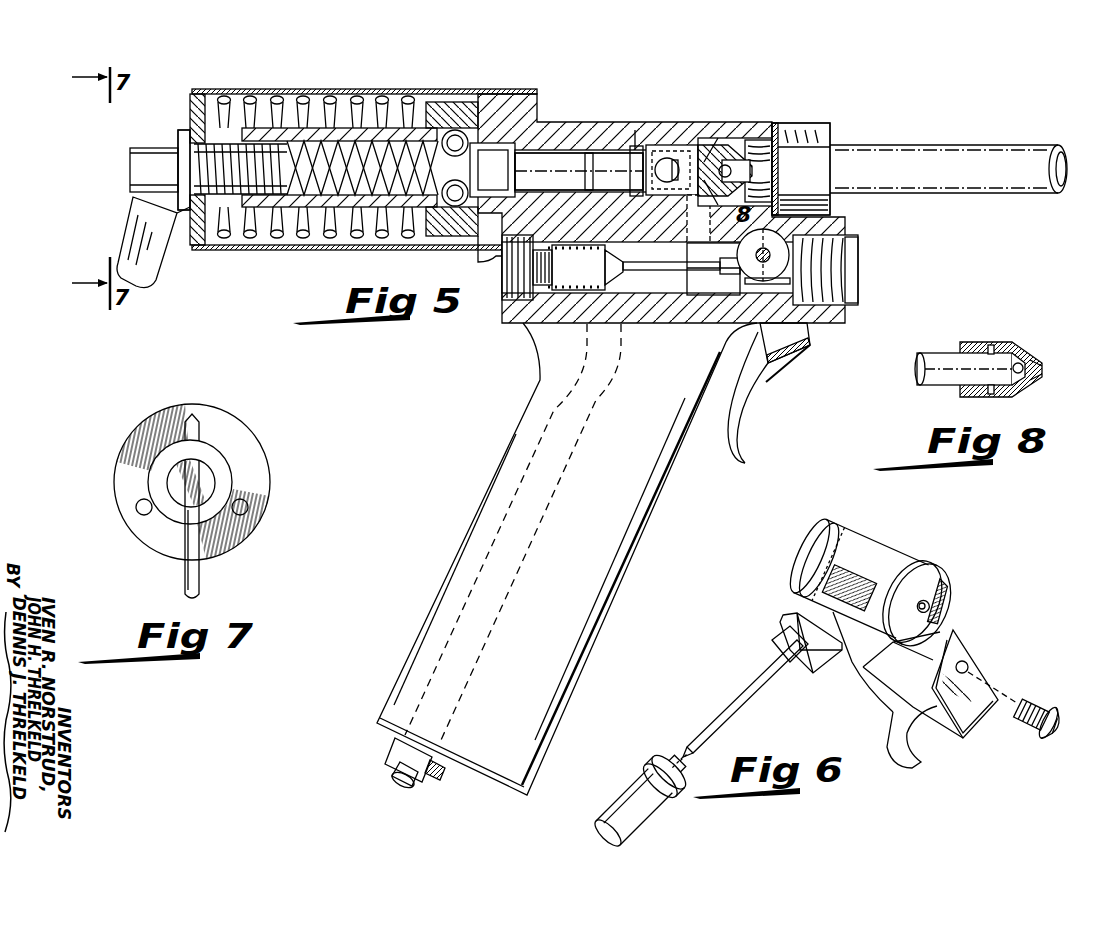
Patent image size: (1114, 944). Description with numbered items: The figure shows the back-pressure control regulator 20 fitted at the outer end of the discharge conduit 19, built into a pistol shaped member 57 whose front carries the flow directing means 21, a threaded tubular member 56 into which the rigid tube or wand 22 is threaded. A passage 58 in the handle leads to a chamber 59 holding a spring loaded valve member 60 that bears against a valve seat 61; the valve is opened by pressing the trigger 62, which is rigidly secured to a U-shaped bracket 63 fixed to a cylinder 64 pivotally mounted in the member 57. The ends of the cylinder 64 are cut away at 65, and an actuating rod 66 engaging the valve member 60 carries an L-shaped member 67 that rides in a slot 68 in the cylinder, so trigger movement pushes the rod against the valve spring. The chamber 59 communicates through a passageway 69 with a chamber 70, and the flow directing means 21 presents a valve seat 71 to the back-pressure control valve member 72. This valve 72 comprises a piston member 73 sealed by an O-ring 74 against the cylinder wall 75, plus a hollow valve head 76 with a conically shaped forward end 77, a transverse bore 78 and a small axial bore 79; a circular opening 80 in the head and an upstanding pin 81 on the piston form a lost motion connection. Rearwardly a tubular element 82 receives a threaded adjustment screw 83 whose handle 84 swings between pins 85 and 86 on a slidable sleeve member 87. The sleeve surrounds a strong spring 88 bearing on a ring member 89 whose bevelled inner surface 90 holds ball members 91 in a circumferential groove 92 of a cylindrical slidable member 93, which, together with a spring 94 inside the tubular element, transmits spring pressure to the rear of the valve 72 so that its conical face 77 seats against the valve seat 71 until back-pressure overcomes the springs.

In FIG. 5, the discharge conduit 19 is at (392, 768).
In FIG. 5, the back-pressure control regulator 20 is at (352, 86).
In FIG. 5, the flow directing means 21 is at (790, 120).
In FIG. 5, the rigid tube or wand 22 is at (920, 153).
In FIG. 5, the threaded tubular member 56 is at (830, 142).
In FIG. 5, the pistol shaped member 57 is at (682, 509).
In FIG. 5, the passage 58 is at (540, 412).
In FIG. 5, the chamber 59 is at (540, 286).
In FIG. 5, the spring loaded valve member 60 is at (585, 267).
In FIG. 6, the spring loaded valve member 60 is at (630, 792).
In FIG. 5, the valve seat 61 is at (630, 274).
In FIG. 5, the trigger 62 is at (764, 386).
In FIG. 6, the trigger 62 is at (890, 730).
In FIG. 6, the U-shaped bracket 63 is at (970, 660).
In FIG. 6, the cylinder 64 is at (884, 550).
In FIG. 6, the cut away ends 65 is at (930, 578).
In FIG. 5, the actuating rod 66 is at (681, 275).
In FIG. 6, the actuating rod 66 is at (722, 718).
In FIG. 5, the L-shaped member 67 is at (758, 285).
In FIG. 6, the L-shaped member 67 is at (841, 664).
In FIG. 6, the slot 68 is at (832, 608).
In FIG. 5, the passageway 69 is at (713, 267).
In FIG. 5, the chamber 70 is at (632, 192).
In FIG. 5, the valve seat 71 is at (738, 158).
In FIG. 5, the valve member 72 is at (583, 150).
In FIG. 5, the piston member 73 is at (572, 178).
In FIG. 8, the piston member 73 is at (945, 355).
In FIG. 5, the O-ring 74 is at (592, 153).
In FIG. 5, the cylinder wall 75 is at (545, 150).
In FIG. 5, the hollow valve head 76 is at (655, 145).
In FIG. 8, the hollow valve head 76 is at (1005, 342).
In FIG. 5, the conically shaped forward end 77 is at (722, 205).
In FIG. 8, the conically shaped forward end 77 is at (1036, 380).
In FIG. 5, the transverse bore 78 is at (690, 220).
In FIG. 8, the transverse bore 78 is at (1025, 360).
In FIG. 5, the axial bore 79 is at (724, 165).
In FIG. 8, the axial bore 79 is at (1025, 368).
In FIG. 5, the circular opening 80 is at (670, 158).
In FIG. 8, the circular opening 80 is at (988, 392).
In FIG. 5, the upstanding pin 81 is at (674, 182).
In FIG. 8, the upstanding pin 81 is at (991, 345).
In FIG. 5, the tubular element 82 is at (300, 128).
In FIG. 5, the threaded adjustment screw 83 is at (193, 128).
In FIG. 5, the handle 84 is at (150, 289).
In FIG. 7, the handle 84 is at (185, 580).
In FIG. 7, the pin 85 is at (250, 505).
In FIG. 7, the pin 86 is at (136, 507).
In FIG. 5, the slidable sleeve member 87 is at (254, 99).
In FIG. 7, the slidable sleeve member 87 is at (255, 442).
In FIG. 5, the spring 88 is at (228, 98).
In FIG. 5, the ring member 89 is at (440, 102).
In FIG. 5, the bevelled inner surface 90 is at (482, 250).
In FIG. 5, the ball members 91 is at (469, 196).
In FIG. 5, the circumferential groove 92 is at (469, 143).
In FIG. 5, the cylindrical slidable member 93 is at (492, 170).
In FIG. 5, the spring 94 is at (307, 200).